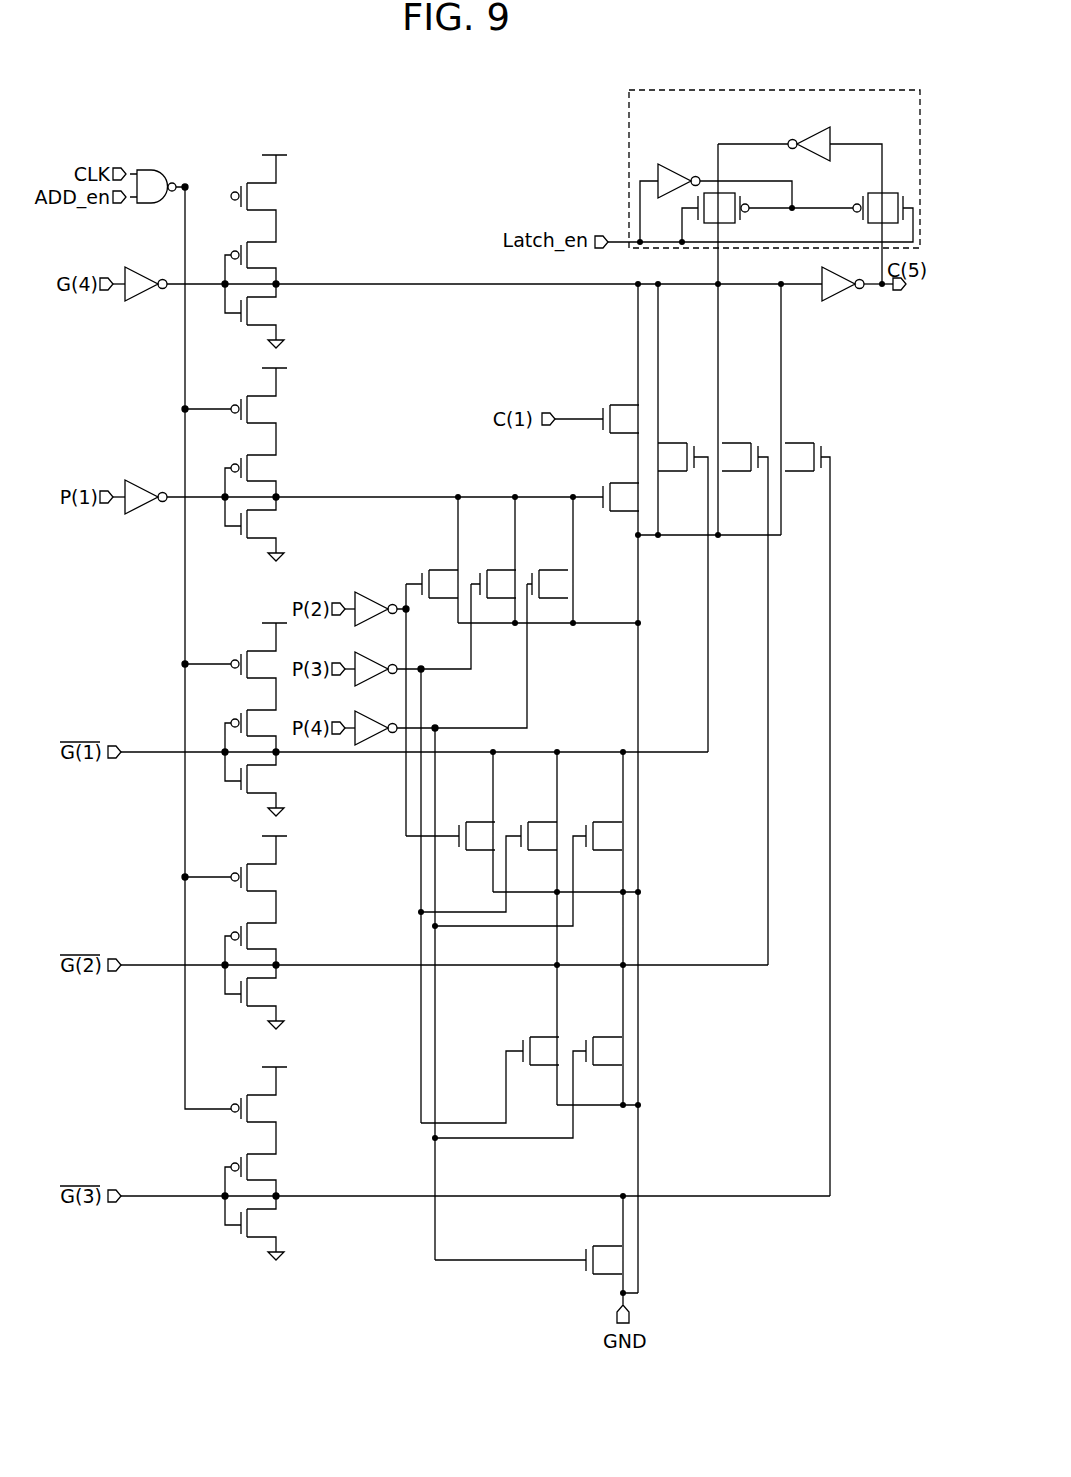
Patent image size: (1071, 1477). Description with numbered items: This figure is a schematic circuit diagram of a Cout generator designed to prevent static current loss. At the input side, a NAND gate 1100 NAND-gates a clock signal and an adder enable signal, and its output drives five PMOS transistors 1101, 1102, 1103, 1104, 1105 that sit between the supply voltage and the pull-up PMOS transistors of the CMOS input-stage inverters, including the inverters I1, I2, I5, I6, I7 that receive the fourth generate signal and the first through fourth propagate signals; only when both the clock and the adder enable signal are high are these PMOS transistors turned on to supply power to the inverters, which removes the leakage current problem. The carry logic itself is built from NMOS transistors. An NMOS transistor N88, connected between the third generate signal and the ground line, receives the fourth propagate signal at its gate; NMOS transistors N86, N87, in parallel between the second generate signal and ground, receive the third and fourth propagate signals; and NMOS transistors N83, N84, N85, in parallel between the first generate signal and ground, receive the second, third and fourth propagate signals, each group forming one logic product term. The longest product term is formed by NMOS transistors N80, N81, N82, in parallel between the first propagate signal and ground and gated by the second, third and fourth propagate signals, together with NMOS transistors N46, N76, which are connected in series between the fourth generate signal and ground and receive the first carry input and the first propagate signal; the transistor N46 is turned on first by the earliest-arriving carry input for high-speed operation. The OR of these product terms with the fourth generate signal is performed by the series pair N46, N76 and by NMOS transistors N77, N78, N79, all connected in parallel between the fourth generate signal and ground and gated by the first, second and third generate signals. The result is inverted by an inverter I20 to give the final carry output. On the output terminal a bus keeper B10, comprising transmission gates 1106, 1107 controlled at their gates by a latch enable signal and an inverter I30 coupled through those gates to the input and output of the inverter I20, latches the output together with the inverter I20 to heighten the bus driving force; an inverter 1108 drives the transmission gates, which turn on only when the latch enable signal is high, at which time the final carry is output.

The NAND gate 1100 is at (165, 160).
The PMOS transistor 1101 is at (268, 182).
The PMOS transistor 1102 is at (268, 395).
The PMOS transistor 1103 is at (268, 650).
The PMOS transistor 1104 is at (268, 863).
The PMOS transistor 1105 is at (268, 1094).
The transmission gate 1106 is at (745, 213).
The transmission gate 1107 is at (878, 190).
The inverter 1108 is at (677, 166).
The bus keeper B10 is at (736, 88).
The inverter I1 is at (143, 268).
The input-stage inverter I2 is at (143, 481).
The input-stage inverter I5 is at (378, 602).
The input-stage inverter I6 is at (378, 662).
The input-stage inverter I7 is at (378, 721).
The inverter I20 is at (847, 294).
The inverter I30 is at (810, 130).
The NMOS transistor N46 is at (623, 403).
The NMOS transistor N76 is at (623, 484).
The NMOS transistor N77 is at (673, 442).
The NMOS transistor N78 is at (733, 442).
The NMOS transistor N79 is at (793, 442).
The NMOS transistor N80 is at (450, 568).
The NMOS transistor N81 is at (510, 568).
The NMOS transistor N82 is at (567, 568).
The NMOS transistor N83 is at (480, 820).
The NMOS transistor N84 is at (543, 820).
The NMOS transistor N85 is at (610, 820).
The NMOS transistor N86 is at (543, 1035).
The NMOS transistor N87 is at (610, 1035).
The NMOS transistor N88 is at (610, 1246).